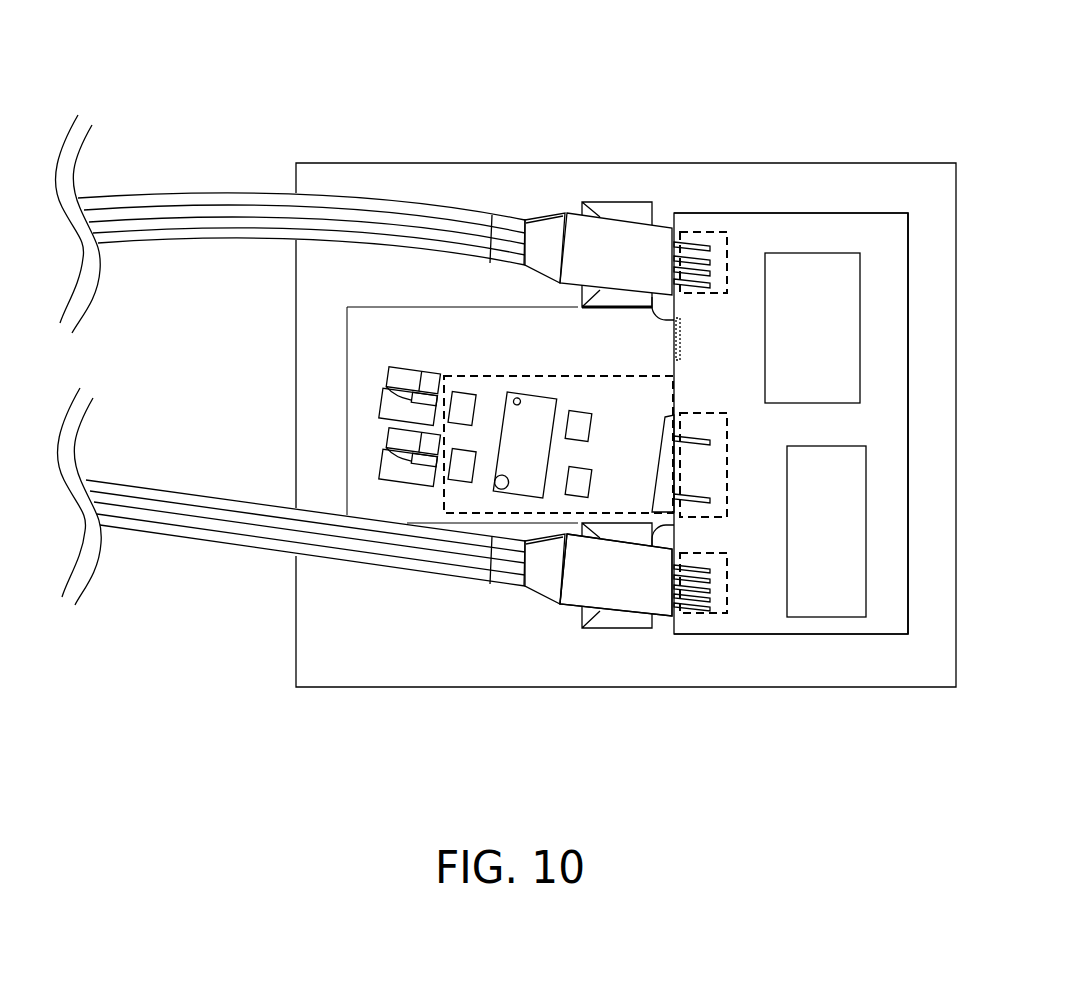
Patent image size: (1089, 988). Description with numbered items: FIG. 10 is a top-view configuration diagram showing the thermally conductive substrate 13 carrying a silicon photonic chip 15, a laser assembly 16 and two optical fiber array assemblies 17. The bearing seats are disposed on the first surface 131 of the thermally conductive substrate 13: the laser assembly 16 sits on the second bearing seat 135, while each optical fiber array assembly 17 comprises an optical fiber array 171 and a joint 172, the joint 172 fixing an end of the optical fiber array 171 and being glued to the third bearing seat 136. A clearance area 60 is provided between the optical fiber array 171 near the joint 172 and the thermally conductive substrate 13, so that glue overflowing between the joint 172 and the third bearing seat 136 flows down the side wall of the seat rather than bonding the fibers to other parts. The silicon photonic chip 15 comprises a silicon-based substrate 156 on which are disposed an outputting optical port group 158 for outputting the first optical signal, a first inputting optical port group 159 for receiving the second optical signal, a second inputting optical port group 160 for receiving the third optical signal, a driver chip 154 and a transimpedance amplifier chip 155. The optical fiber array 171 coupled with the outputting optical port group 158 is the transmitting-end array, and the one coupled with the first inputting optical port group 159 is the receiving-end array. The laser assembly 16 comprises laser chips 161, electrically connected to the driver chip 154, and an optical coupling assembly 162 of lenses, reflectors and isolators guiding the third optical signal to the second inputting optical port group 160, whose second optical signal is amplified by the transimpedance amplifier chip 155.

The thermally conductive substrate 13 is at (953, 548).
The silicon photonic chip 15 is at (906, 602).
The laser assembly 16 is at (298, 401).
The optical fiber array assembly 17 is at (470, 88).
The clearance area 60 is at (566, 630).
The first surface 131 is at (832, 186).
The second bearing seat 135 is at (377, 303).
The third bearing seat 136 is at (628, 213).
The driver chip 154 is at (837, 343).
The transimpedance amplifier chip 155 is at (832, 600).
The silicon-based substrate 156 is at (878, 442).
The outputting optical port group 158 is at (688, 230).
The first inputting optical port group 159 is at (698, 614).
The second inputting optical port group 160 is at (723, 478).
The laser chip 161 is at (386, 390).
The optical coupling assembly 162 is at (515, 376).
The optical fiber array 171 is at (413, 203).
The joint 172 is at (602, 226).